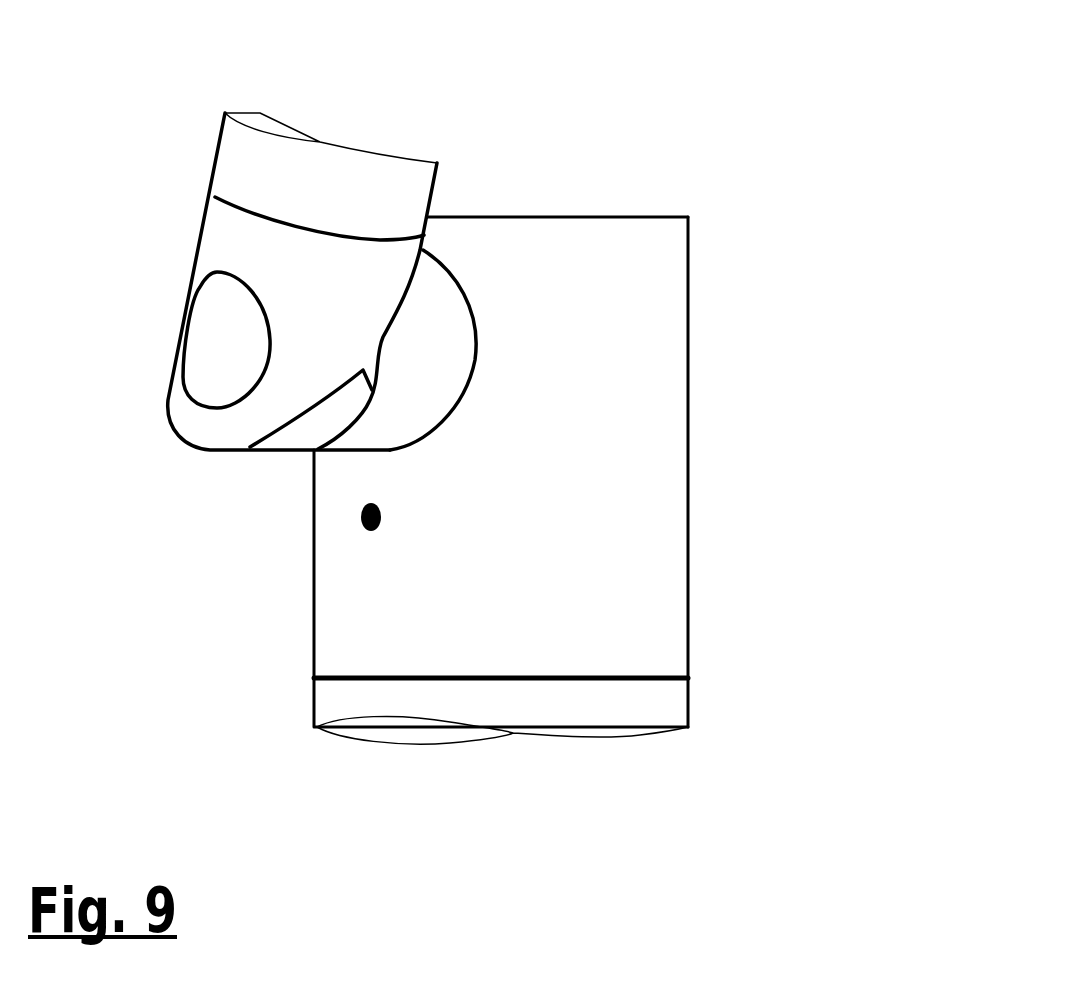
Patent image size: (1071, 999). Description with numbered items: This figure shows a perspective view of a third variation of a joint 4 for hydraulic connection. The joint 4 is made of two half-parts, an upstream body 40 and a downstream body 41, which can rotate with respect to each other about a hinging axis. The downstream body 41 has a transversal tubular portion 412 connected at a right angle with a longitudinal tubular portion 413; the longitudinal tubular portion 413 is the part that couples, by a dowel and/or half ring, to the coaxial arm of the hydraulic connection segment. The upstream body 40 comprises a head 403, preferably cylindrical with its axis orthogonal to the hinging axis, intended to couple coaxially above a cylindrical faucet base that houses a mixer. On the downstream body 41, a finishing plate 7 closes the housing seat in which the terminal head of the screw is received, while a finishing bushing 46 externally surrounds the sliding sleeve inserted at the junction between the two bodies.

The joint 4 is at (672, 156).
The upstream body 40 is at (688, 498).
The head 403 is at (592, 360).
The downstream body 41 is at (183, 423).
The transversal tubular portion 412 is at (286, 450).
The longitudinal tubular portion 413 is at (217, 233).
The finishing plate 7 is at (202, 327).
The finishing bushing 46 is at (430, 350).